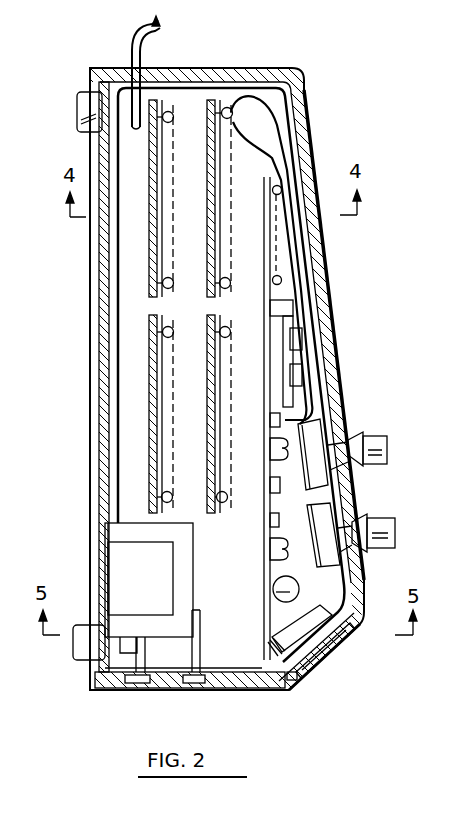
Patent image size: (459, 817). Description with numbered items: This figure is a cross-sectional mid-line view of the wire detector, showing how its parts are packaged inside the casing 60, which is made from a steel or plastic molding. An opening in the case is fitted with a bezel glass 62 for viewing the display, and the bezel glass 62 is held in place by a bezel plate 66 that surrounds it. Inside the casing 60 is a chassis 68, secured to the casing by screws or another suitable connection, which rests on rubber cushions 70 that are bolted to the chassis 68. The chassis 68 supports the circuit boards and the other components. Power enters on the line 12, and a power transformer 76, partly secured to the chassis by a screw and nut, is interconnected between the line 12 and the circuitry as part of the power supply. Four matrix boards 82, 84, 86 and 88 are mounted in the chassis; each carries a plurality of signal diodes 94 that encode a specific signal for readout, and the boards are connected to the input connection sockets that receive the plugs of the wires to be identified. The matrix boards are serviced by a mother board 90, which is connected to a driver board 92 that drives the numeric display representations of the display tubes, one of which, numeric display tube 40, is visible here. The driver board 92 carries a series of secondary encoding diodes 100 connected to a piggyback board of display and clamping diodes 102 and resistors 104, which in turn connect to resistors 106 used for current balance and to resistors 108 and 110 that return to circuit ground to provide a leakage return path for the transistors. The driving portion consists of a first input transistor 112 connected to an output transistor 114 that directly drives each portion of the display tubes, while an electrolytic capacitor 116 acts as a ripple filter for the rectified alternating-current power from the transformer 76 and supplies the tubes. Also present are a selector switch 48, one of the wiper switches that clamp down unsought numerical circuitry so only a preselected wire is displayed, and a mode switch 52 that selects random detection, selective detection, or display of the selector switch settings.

The line 12 is at (150, 44).
The numeric display tube 40 is at (301, 589).
The selector switch 48 is at (395, 534).
The mode switch 52 is at (388, 453).
The casing 60 is at (342, 345).
The bezel glass 62 is at (316, 644).
The bezel plate 66 is at (297, 680).
The chassis 68 is at (94, 440).
The rubber cushions 70 is at (80, 655).
The power transformer 76 is at (152, 597).
The matrix board 82 is at (151, 221).
The matrix board 84 is at (208, 203).
The matrix board 86 is at (208, 404).
The matrix board 88 is at (150, 404).
The mother board 90 is at (229, 645).
The driver board 92 is at (262, 220).
The signal diodes 94 is at (174, 119).
The secondary encoding diodes 100 is at (283, 190).
The display and clamping diodes 102 is at (302, 336).
The resistors 104 is at (302, 380).
The resistors 106 is at (280, 418).
The resistor 108 is at (284, 488).
The resistor 110 is at (270, 522).
The first input transistor 112 is at (273, 452).
The output transistor 114 is at (272, 553).
The electrolytic capacitor 116 is at (278, 596).